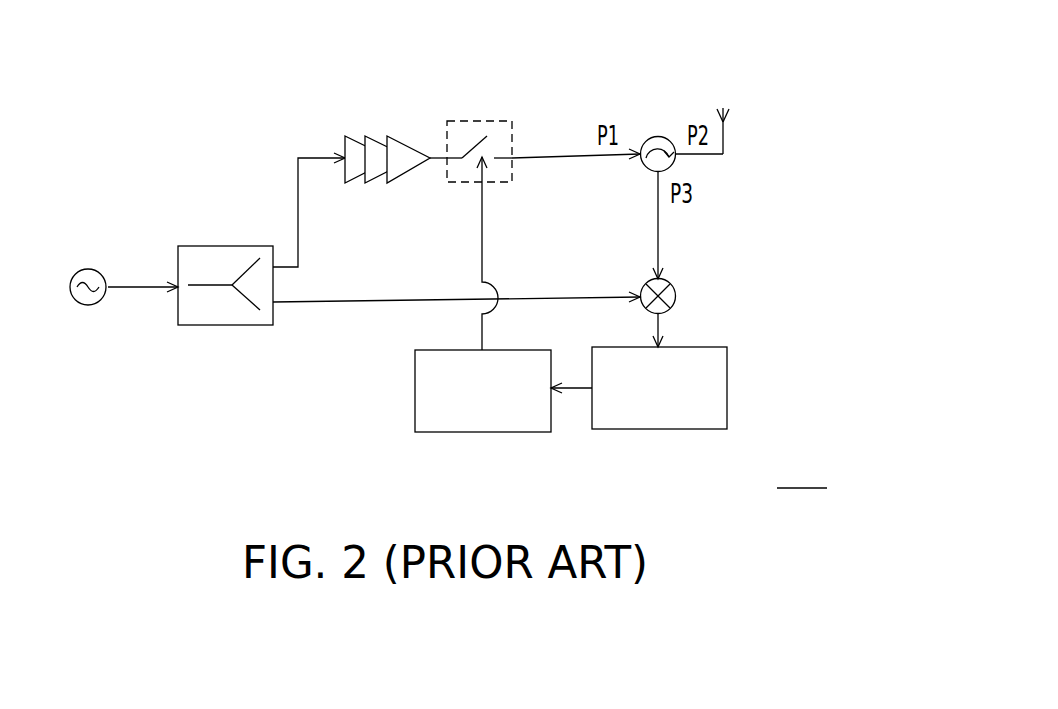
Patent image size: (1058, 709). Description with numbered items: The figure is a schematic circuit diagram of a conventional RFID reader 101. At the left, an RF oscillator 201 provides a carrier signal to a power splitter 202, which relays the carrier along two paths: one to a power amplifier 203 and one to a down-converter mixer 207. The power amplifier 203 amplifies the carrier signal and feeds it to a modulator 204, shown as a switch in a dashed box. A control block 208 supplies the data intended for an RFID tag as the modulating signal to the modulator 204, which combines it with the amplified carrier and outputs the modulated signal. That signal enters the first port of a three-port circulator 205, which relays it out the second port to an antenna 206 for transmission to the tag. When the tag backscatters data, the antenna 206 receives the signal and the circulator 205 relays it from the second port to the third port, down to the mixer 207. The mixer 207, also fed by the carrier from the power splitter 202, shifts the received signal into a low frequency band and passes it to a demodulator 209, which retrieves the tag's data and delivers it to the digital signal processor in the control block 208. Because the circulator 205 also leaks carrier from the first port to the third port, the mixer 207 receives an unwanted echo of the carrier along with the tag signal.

The RFID reader 101 is at (802, 472).
The RF oscillator 201 is at (92, 268).
The power splitter 202 is at (228, 246).
The power amplifier 203 is at (410, 137).
The modulator 204 is at (492, 121).
The circulator 205 is at (658, 136).
The antenna 206 is at (745, 122).
The mixer 207 is at (680, 296).
The control block 208 is at (483, 433).
The demodulator 209 is at (657, 430).